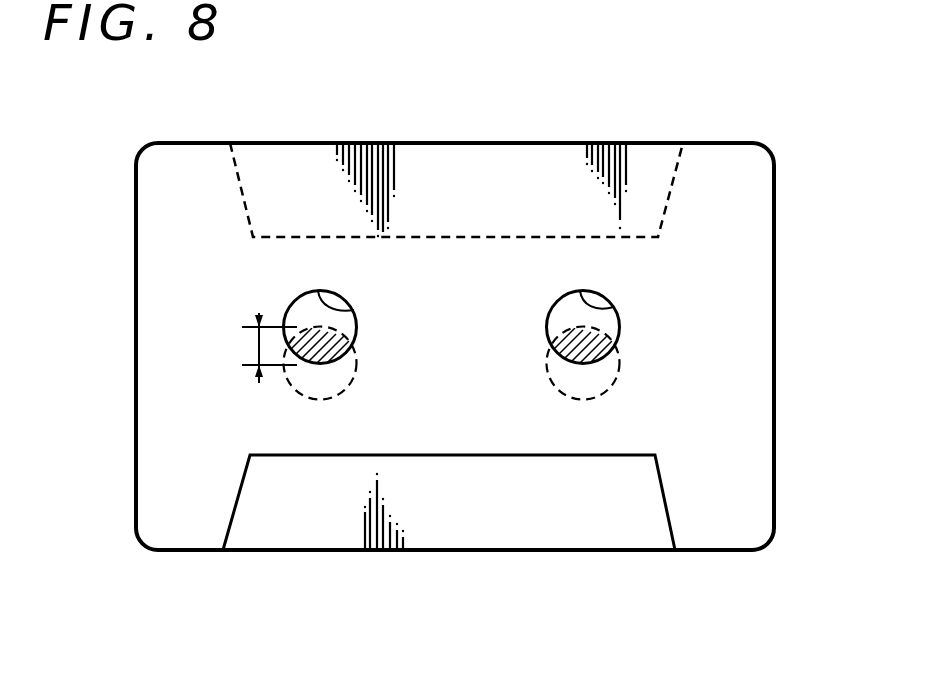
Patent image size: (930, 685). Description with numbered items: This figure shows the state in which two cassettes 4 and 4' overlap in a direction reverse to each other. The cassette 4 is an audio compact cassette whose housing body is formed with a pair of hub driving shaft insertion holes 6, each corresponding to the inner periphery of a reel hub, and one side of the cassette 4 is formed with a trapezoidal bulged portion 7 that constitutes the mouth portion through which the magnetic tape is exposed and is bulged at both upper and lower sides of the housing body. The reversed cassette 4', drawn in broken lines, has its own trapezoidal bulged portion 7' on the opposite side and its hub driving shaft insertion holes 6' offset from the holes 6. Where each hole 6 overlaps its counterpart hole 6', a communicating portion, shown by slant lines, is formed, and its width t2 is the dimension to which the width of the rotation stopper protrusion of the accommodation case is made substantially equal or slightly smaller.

The cassette 4 is at (482, 346).
The cassette 4' is at (797, 290).
The trapezoidal bulged portion 7 is at (449, 534).
The trapezoidal bulged portion 7' is at (456, 153).
The hub driving shaft insertion hole 6 is at (462, 333).
The hub driving shaft insertion hole 6' is at (474, 370).
The width of communicating portion t2 is at (256, 347).